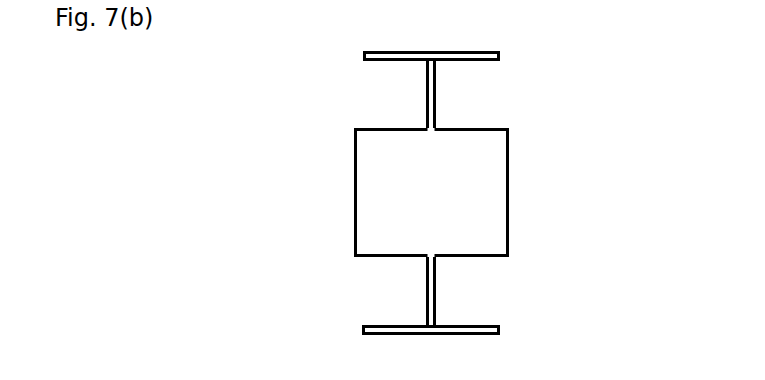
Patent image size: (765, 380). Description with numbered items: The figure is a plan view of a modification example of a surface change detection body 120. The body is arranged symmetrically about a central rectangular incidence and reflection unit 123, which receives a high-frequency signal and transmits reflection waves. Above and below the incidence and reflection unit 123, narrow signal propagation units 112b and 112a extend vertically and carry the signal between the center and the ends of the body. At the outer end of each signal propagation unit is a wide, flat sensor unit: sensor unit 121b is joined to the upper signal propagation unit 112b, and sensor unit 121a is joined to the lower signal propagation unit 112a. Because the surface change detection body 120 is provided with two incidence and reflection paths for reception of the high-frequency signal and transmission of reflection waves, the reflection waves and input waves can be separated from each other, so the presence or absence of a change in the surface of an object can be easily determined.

The surface change detection body 120 is at (583, 84).
The sensor unit 121a is at (500, 331).
The sensor unit 121b is at (363, 59).
The signal propagation unit 112a is at (426, 283).
The signal propagation unit 112b is at (426, 103).
The incidence and reflection unit 123 is at (510, 193).